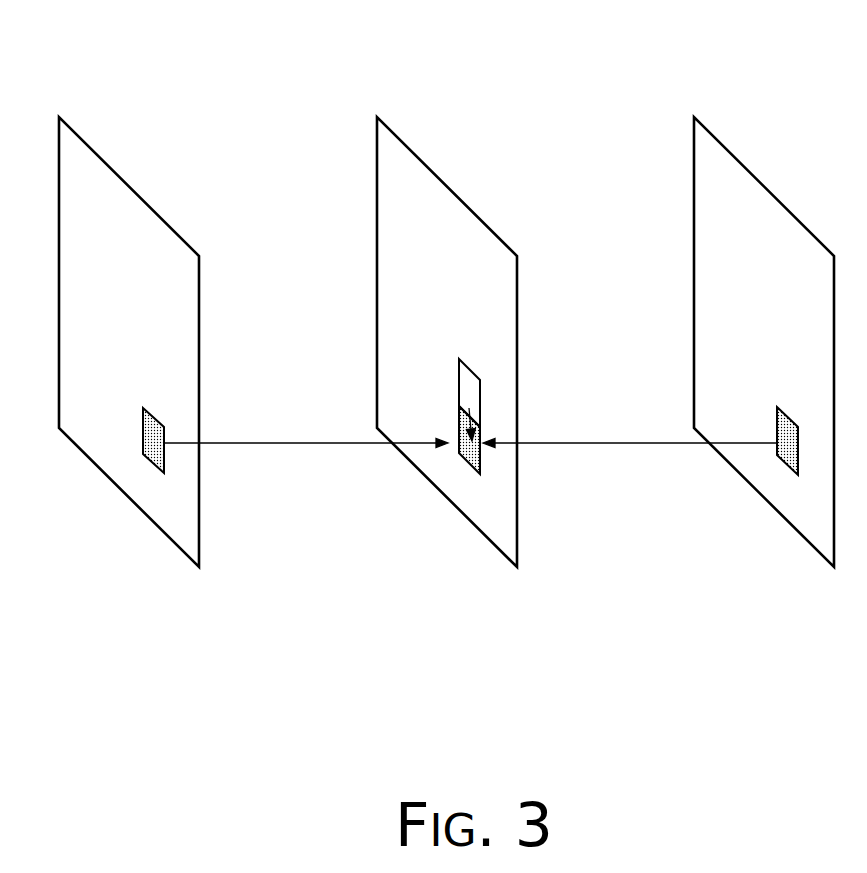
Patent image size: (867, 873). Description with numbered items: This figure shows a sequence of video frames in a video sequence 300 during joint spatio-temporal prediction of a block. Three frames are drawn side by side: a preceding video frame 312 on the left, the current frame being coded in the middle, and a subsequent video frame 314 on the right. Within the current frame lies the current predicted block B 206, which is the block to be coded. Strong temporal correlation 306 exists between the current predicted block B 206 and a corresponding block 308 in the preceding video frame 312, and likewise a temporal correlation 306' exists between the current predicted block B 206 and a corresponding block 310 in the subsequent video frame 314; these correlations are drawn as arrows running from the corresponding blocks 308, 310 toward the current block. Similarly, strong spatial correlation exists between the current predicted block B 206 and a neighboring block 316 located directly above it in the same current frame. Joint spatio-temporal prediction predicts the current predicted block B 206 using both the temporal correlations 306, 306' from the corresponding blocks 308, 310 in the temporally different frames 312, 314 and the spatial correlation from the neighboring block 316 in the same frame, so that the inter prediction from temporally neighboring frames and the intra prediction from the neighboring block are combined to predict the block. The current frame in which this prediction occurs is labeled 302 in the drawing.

The video sequence 300 is at (334, 70).
The current frame i being coded 302 is at (455, 755).
The temporal correlation 306 is at (306, 433).
The temporal correlation 306' is at (630, 416).
The corresponding block 308 is at (155, 423).
The corresponding block 310 is at (789, 420).
The preceding video frame 312 is at (170, 680).
The subsequent video frame 314 is at (803, 680).
The neighboring block 316 is at (471, 376).
The current predicted block B 206 is at (482, 457).